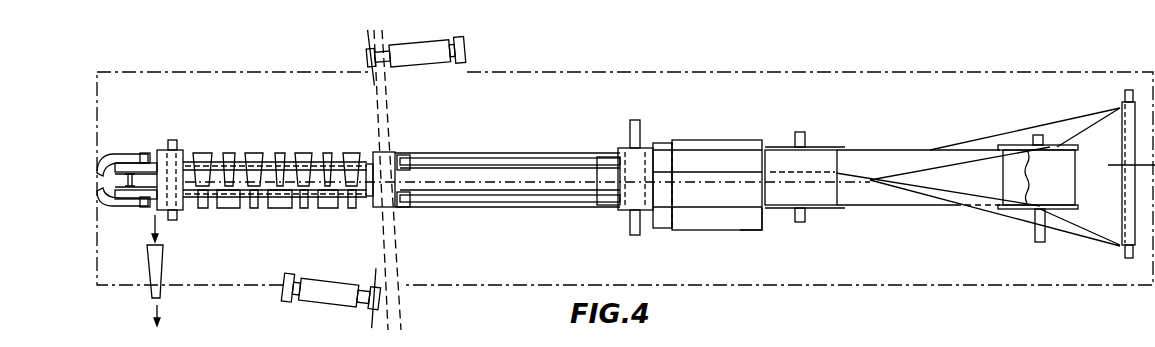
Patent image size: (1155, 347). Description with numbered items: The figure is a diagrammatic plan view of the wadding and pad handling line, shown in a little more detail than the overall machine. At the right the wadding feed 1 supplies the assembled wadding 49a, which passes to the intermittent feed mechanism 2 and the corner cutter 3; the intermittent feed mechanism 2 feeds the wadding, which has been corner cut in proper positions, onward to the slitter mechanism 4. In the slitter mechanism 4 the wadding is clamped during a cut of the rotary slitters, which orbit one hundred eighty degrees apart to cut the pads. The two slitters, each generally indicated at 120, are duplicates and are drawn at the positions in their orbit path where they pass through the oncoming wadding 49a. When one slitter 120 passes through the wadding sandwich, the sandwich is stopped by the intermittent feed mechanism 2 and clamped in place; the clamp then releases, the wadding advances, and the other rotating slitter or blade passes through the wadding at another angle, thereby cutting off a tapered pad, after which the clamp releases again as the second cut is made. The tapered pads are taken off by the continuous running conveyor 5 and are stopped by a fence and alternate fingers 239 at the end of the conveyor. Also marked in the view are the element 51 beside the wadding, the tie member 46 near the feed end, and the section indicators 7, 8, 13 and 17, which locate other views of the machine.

The section line 7-7 indicator 7 is at (67, 124).
The alternate fingers 239 is at (101, 196).
The continuous running conveyor 5 is at (259, 146).
The section line 17-17 indicator 17 is at (298, 124).
The slitter mechanism 4 is at (408, 144).
The section line 8-8 indicator 8 is at (392, 20).
The slitter 120 is at (430, 70).
The intermittent feed mechanism 2 is at (529, 146).
The corner cutter 3 is at (604, 150).
The wadding 49a is at (736, 160).
The housing end plate 51 is at (751, 220).
The wadding feed 1 is at (891, 146).
The tie rod 46 is at (1070, 145).
The section line 13-13 indicator 13 is at (887, 345).